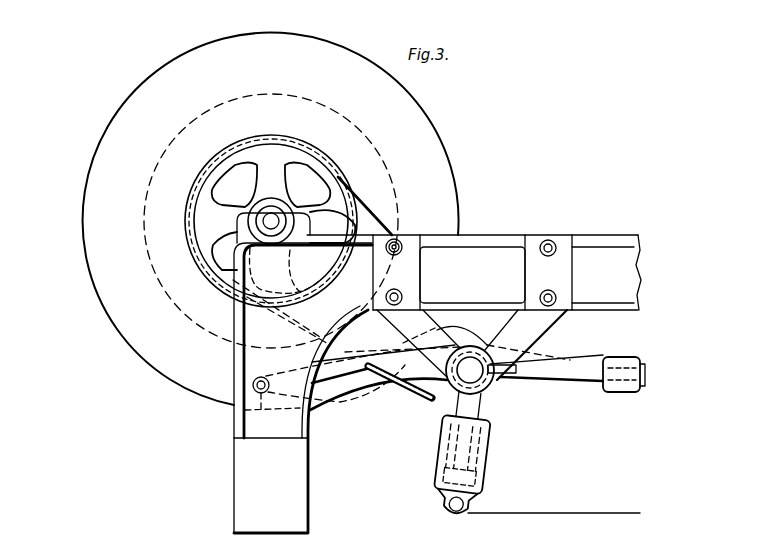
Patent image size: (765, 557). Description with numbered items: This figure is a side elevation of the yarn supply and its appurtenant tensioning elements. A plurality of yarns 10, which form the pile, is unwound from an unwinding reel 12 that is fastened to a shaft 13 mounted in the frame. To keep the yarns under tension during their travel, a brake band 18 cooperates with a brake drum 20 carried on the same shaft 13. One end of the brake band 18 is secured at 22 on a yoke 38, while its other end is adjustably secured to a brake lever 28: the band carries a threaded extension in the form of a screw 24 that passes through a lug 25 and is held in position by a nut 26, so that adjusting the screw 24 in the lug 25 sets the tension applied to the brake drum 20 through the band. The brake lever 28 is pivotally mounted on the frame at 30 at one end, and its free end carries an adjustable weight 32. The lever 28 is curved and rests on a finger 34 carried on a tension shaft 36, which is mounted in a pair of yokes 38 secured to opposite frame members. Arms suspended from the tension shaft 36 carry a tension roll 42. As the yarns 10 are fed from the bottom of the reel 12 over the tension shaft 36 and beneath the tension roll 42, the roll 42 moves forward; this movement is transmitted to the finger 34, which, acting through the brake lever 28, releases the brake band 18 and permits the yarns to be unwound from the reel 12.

The yarns 10 is at (199, 328).
The unwinding reel 12 is at (193, 394).
The shaft 13 is at (272, 220).
The brake band 18 is at (367, 205).
The brake drum 20 is at (204, 262).
The securing point of brake band 22 is at (397, 244).
The screw 24 is at (406, 392).
The lug 25 is at (359, 388).
The nut 26 is at (357, 352).
The brake lever 28 is at (330, 376).
The pivot 30 is at (267, 402).
The adjustable weight 32 is at (622, 390).
The finger 34 is at (520, 376).
The tension shaft 36 is at (478, 380).
The yoke 38 is at (558, 320).
The tension roll 42 is at (452, 510).